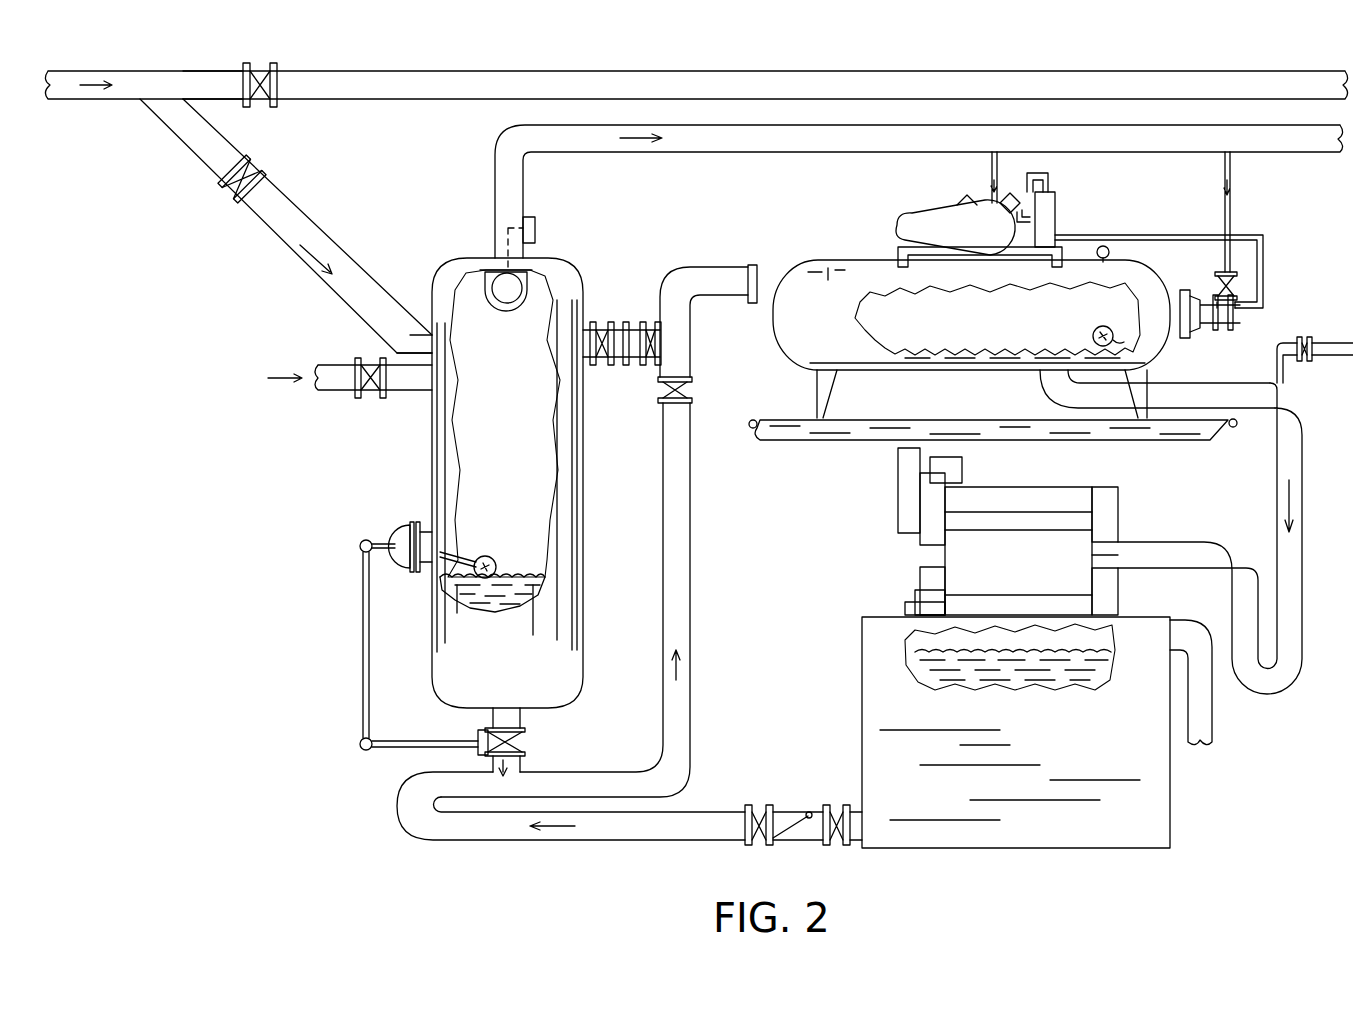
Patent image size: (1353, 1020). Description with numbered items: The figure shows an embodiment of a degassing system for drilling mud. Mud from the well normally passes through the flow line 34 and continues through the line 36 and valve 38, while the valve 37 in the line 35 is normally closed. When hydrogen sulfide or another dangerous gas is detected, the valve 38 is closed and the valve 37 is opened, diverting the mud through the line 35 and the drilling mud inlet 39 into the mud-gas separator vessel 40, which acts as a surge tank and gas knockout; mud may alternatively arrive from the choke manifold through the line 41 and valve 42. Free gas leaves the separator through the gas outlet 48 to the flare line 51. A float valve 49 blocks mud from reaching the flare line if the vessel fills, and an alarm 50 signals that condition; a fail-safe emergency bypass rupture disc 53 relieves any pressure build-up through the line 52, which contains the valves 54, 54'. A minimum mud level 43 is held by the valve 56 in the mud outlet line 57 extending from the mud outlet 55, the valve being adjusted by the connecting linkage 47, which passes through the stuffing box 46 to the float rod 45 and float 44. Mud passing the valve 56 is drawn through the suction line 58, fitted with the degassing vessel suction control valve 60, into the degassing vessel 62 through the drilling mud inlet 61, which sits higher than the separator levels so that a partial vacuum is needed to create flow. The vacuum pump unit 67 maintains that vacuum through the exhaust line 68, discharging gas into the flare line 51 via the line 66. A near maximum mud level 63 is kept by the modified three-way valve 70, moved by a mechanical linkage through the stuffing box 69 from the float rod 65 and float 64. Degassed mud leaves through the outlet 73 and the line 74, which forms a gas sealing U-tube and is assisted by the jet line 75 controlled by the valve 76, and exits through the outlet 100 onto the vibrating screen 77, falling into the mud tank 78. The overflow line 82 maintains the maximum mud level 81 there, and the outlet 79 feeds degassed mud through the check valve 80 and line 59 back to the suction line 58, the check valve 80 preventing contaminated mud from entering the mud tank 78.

The flow line 34 is at (73, 103).
The line 35 is at (183, 150).
The line 36 is at (222, 103).
The valve 37 is at (230, 192).
The valve 38 is at (262, 104).
The drilling mud inlet 39 is at (425, 333).
The mud-gas separator vessel 40 is at (440, 428).
The line 41 is at (402, 395).
The valve 42 is at (365, 355).
The minimum mud level 43 is at (524, 575).
The float 44 is at (492, 557).
The float rod 45 is at (450, 552).
The stuffing box 46 is at (428, 520).
The connecting linkage 47 is at (360, 636).
The gas outlet 48 is at (522, 300).
The float valve 49 is at (505, 297).
The alarm 50 is at (530, 215).
The flare line 51 is at (495, 168).
The line 52 is at (593, 368).
The fail-safe emergency bypass rupture disc 53 is at (628, 368).
The valve 54 is at (605, 321).
The valve 54' is at (646, 321).
The mud outlet 55 is at (510, 705).
The valve 56 is at (512, 740).
The mud outlet line 57 is at (490, 720).
The suction line 58 is at (612, 770).
The line 59 is at (525, 845).
The degassing vessel suction control valve 60 is at (695, 392).
The drilling mud inlet 61 is at (752, 270).
The degassing vessel 62 is at (842, 280).
The near maximum mud level 63 is at (1028, 340).
The float 64 is at (1097, 330).
The float rod 65 is at (1120, 328).
The line 66 is at (985, 178).
The vacuum pump unit 67 is at (945, 215).
The exhaust line 68 is at (1180, 236).
The stuffing box 69 is at (1182, 292).
The modified three-way valve 70 is at (1235, 290).
The outlet 73 is at (1048, 375).
The line 74 is at (1296, 424).
The jet line 75 is at (1290, 370).
The valve 76 is at (1300, 338).
The vibrating screen 77 is at (1090, 535).
The mud tank 78 is at (858, 690).
The outlet 79 is at (858, 845).
The check valve 80 is at (795, 845).
The maximum mud level 81 is at (1001, 650).
The overflow line 82 is at (1208, 706).
The outlet 100 is at (1092, 555).